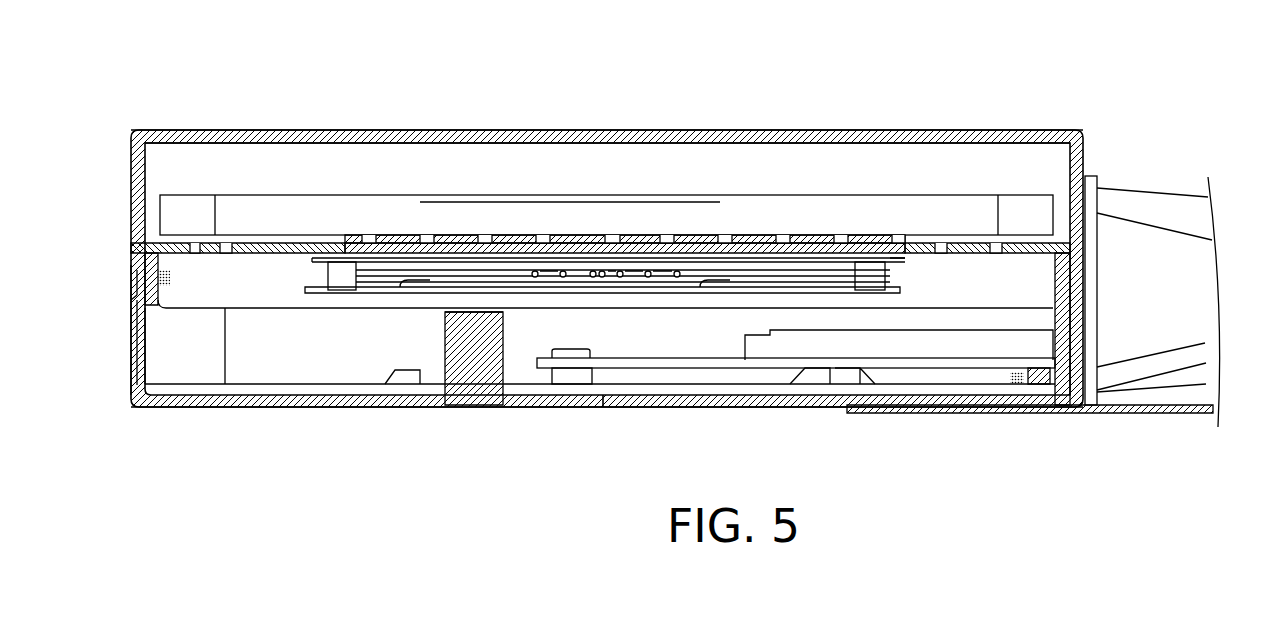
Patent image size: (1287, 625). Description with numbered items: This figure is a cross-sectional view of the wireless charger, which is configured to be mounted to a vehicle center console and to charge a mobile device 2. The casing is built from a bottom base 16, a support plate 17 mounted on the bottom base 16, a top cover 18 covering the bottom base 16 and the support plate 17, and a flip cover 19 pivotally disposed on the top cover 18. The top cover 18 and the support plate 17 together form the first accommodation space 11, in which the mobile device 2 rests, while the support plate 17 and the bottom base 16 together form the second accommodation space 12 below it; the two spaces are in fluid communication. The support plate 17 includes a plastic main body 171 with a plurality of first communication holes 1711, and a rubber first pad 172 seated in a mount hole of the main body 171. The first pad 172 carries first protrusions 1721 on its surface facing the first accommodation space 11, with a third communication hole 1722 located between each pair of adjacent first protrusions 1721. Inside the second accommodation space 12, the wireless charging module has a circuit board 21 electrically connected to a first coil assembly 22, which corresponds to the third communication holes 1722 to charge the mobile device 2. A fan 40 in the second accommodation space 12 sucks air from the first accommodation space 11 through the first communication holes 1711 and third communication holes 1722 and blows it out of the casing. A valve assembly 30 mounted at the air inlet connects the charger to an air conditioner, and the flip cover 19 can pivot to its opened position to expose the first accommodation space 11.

The mobile device 2 is at (825, 210).
The first accommodation space 11 is at (298, 172).
The second accommodation space 12 is at (311, 352).
The bottom base 16 is at (648, 406).
The support plate 17 is at (279, 262).
The top cover 18 is at (714, 132).
The flip cover 19 is at (175, 134).
The circuit board 21 is at (718, 356).
The first coil assembly 22 is at (922, 280).
The valve assembly 30 is at (1149, 184).
The fan 40 is at (917, 338).
The main body 171 is at (170, 243).
The first pad 172 is at (517, 235).
The first communication holes 1711 is at (224, 238).
The first protrusions 1721 is at (598, 234).
The third communication holes 1722 is at (615, 238).